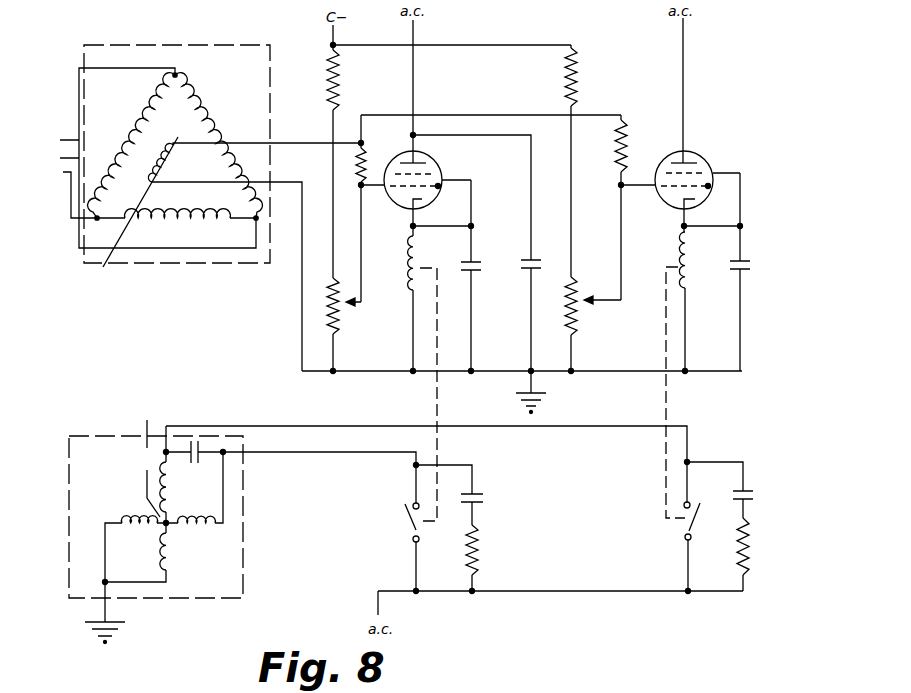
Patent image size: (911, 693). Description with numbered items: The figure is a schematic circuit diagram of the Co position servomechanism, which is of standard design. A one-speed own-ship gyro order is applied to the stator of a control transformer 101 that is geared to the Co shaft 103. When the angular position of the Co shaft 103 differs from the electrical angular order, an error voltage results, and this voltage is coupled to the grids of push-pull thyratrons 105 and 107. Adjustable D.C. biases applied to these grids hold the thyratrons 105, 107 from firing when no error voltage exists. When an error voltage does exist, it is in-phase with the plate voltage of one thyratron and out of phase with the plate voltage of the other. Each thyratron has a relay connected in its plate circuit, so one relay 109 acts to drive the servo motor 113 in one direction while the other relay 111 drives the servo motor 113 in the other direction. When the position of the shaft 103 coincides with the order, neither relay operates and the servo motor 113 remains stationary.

The control transformer 101 is at (270, 55).
The Co shaft 103 is at (147, 459).
The thyratron 105 is at (395, 197).
The thyratron 107 is at (661, 201).
The relay 109 is at (402, 285).
The relay 111 is at (694, 277).
The servo motor 113 is at (243, 487).